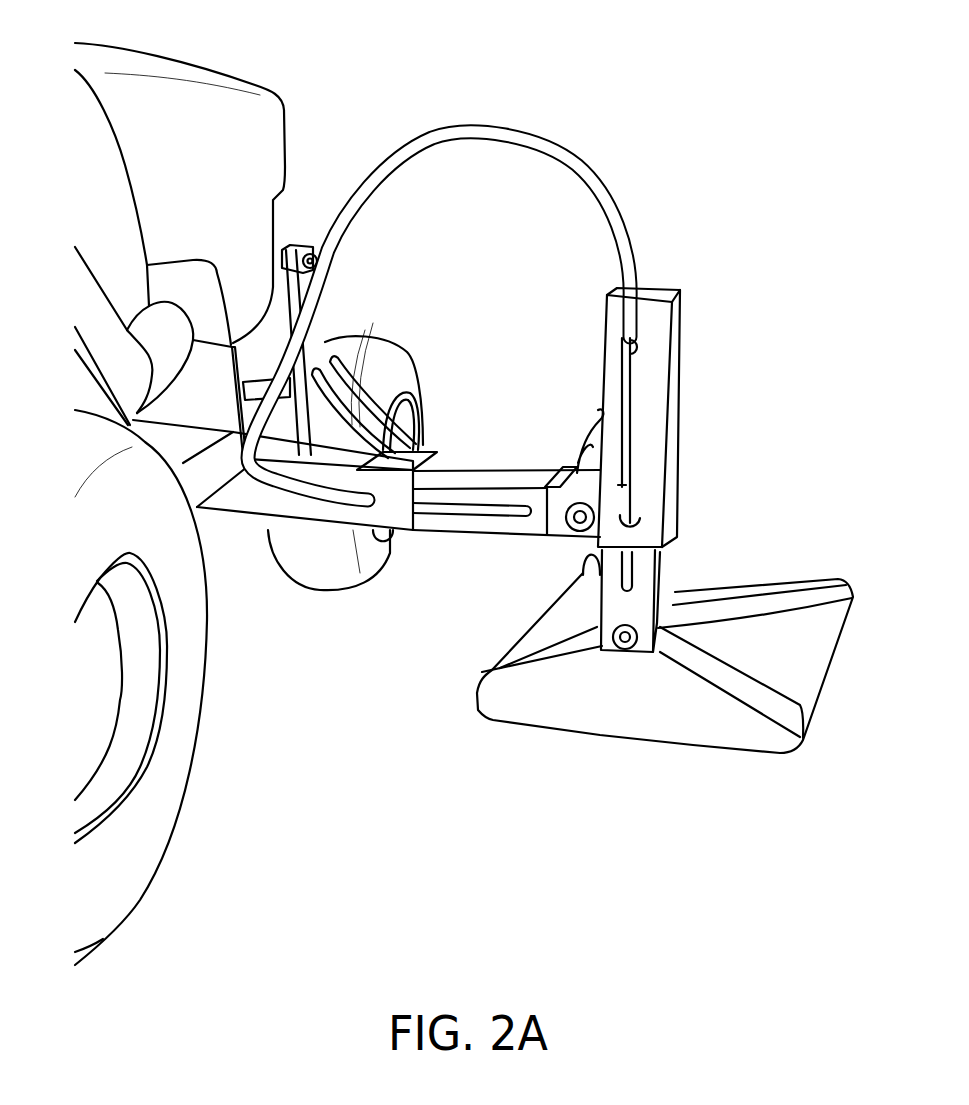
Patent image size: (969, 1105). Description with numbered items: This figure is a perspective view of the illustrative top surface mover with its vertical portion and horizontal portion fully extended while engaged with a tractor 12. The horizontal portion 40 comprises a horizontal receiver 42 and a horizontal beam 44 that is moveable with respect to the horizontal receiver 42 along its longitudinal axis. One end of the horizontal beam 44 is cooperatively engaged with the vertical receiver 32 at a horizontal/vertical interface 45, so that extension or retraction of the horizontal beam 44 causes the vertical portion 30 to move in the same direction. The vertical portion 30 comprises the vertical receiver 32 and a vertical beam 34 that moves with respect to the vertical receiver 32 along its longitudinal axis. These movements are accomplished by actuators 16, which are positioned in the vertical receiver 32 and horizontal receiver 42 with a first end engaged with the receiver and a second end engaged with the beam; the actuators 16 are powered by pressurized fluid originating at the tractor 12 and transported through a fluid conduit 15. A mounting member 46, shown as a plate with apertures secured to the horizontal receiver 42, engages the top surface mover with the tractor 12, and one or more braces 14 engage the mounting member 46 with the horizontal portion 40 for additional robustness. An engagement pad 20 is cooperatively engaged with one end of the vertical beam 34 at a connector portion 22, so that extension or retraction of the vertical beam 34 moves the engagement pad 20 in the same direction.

The tractor 12 is at (190, 63).
The brace 14 is at (327, 427).
The fluid conduit 15 is at (480, 123).
The actuator 16 is at (473, 510).
The engagement pad 20 is at (803, 670).
The connector portion 22 is at (613, 637).
The vertical portion 30 is at (682, 470).
The vertical receiver 32 is at (653, 323).
The vertical beam 34 is at (647, 580).
The horizontal portion 40 is at (414, 499).
The horizontal receiver 42 is at (307, 513).
The horizontal beam 44 is at (437, 523).
The horizontal/vertical interface 45 is at (560, 503).
The mounting member 46 is at (282, 247).